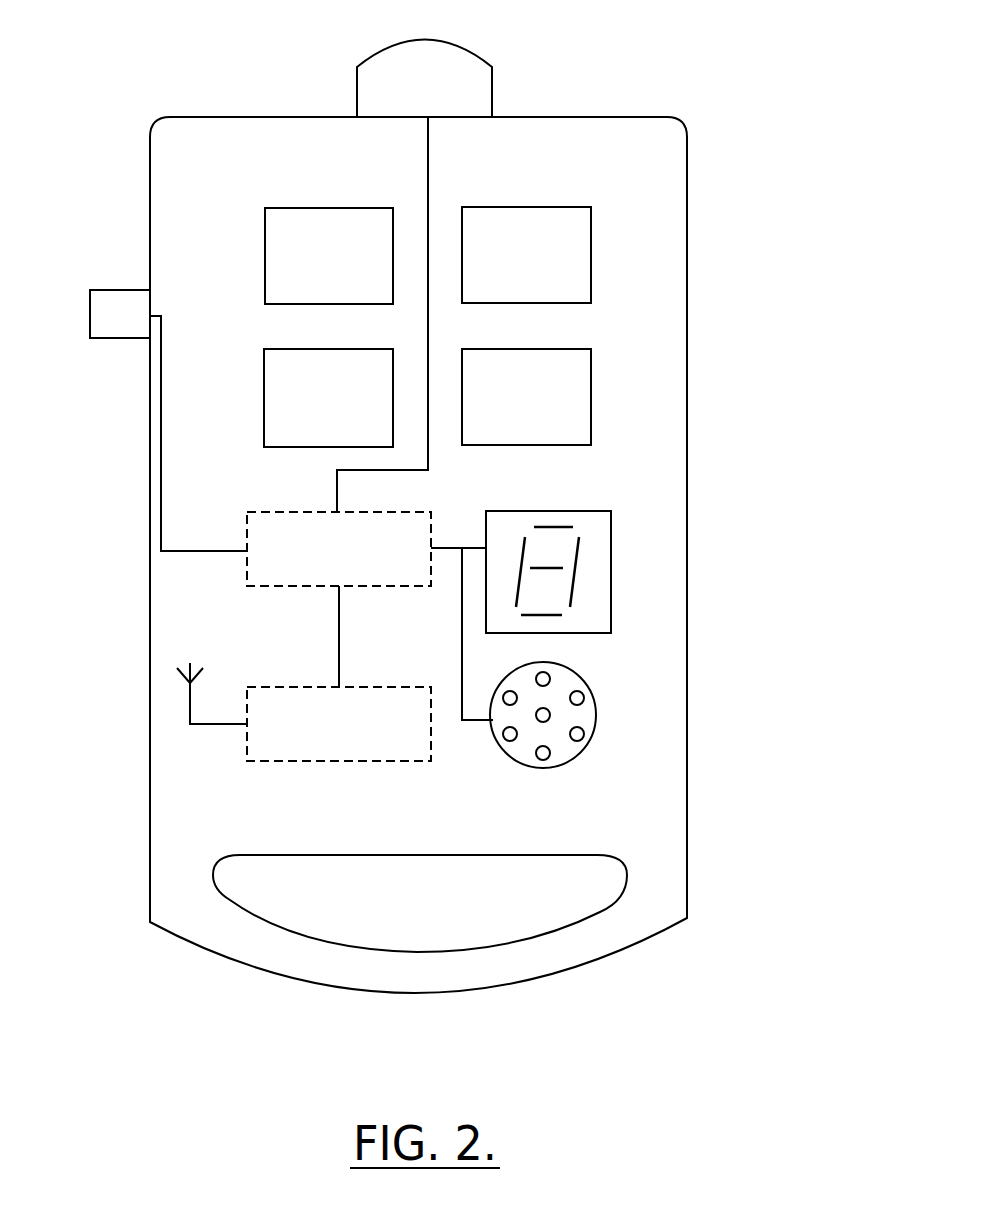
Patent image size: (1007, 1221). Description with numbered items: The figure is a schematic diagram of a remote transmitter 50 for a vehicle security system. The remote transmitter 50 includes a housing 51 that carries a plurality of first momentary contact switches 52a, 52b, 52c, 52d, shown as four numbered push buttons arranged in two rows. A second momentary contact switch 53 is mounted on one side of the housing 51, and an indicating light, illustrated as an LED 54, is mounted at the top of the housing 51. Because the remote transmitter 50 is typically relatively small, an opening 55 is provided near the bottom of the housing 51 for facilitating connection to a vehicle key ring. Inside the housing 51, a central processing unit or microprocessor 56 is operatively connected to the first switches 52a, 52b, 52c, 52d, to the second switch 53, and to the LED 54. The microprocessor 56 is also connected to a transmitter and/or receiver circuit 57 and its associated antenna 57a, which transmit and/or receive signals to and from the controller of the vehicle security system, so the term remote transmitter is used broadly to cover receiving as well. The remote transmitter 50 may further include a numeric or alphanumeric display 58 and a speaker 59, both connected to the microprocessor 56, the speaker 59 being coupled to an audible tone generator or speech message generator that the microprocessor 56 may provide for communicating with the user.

The remote transmitter 50 is at (742, 170).
The housing 51 is at (687, 313).
The first momentary contact switch 52a is at (265, 265).
The first momentary contact switch 52b is at (591, 258).
The first momentary contact switch 52c is at (264, 407).
The first momentary contact switch 52d is at (591, 400).
The second momentary contact switch 53 is at (120, 290).
The LED 54 is at (492, 66).
The opening 55 is at (597, 855).
The microprocessor 56 is at (267, 512).
The transmitter and/or receiver circuit 57 is at (333, 761).
The antenna 57a is at (187, 717).
The display 58 is at (611, 542).
The speaker 59 is at (598, 713).